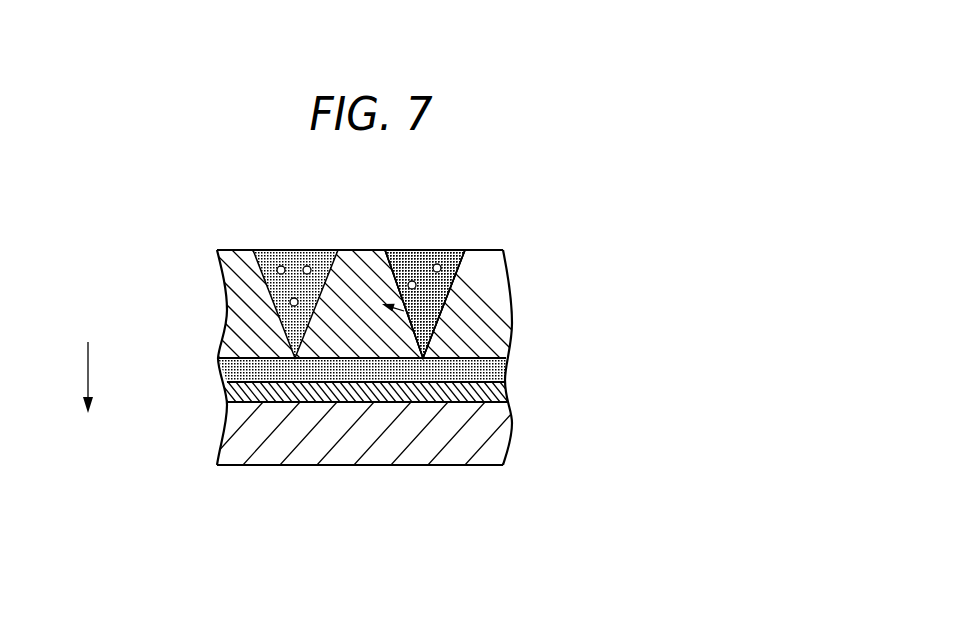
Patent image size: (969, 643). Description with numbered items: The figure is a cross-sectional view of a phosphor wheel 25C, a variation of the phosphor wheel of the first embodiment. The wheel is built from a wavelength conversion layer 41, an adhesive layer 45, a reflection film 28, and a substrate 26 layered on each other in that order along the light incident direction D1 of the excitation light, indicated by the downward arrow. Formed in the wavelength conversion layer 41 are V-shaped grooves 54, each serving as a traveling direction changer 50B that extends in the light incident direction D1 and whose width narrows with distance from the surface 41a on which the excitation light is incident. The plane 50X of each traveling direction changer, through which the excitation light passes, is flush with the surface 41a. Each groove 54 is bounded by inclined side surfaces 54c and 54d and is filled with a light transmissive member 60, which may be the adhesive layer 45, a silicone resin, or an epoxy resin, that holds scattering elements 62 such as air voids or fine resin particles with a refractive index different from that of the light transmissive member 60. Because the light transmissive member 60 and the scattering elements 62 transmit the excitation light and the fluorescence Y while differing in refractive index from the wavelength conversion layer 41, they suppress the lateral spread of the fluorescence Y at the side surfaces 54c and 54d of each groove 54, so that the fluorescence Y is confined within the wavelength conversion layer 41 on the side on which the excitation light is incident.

The wavelength conversion layer 41 is at (255, 306).
The surface of the wavelength conversion layer 41a is at (243, 250).
The adhesive layer 45 is at (227, 370).
The reflection film 28 is at (227, 393).
The substrate 26 is at (245, 432).
The plane of the traveling direction changer 50X is at (293, 250).
The traveling direction changer 50B is at (470, 284).
The light transmissive member 60 is at (420, 257).
The scattering elements 62 is at (437, 264).
The groove 54 is at (438, 297).
The side surface of the groove 54c is at (437, 323).
The side surface of the groove 54d is at (413, 327).
The phosphor wheel 25C is at (491, 491).
The fluorescence Y is at (393, 331).
The light incident direction D1 is at (71, 377).